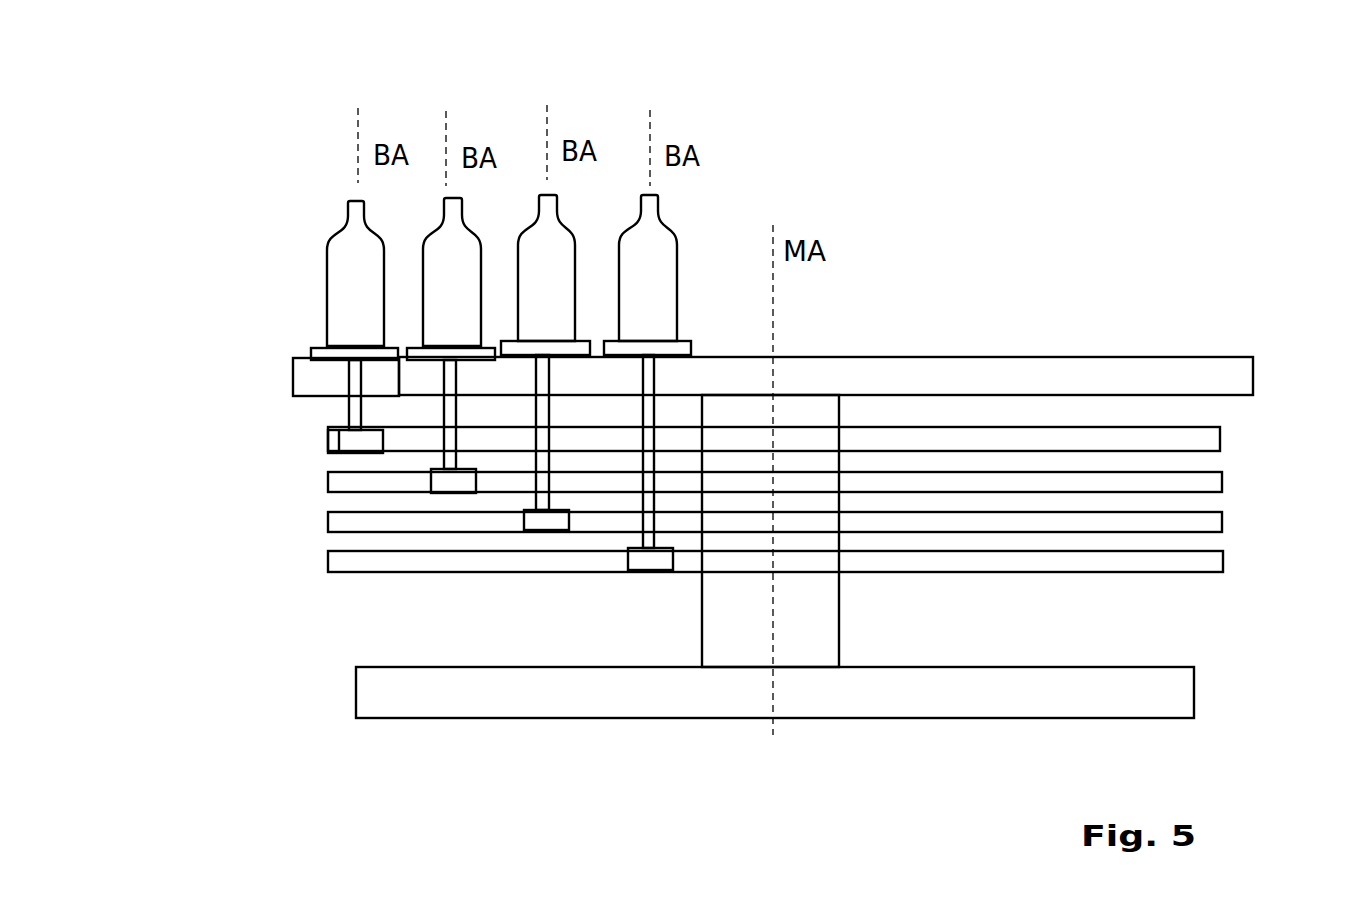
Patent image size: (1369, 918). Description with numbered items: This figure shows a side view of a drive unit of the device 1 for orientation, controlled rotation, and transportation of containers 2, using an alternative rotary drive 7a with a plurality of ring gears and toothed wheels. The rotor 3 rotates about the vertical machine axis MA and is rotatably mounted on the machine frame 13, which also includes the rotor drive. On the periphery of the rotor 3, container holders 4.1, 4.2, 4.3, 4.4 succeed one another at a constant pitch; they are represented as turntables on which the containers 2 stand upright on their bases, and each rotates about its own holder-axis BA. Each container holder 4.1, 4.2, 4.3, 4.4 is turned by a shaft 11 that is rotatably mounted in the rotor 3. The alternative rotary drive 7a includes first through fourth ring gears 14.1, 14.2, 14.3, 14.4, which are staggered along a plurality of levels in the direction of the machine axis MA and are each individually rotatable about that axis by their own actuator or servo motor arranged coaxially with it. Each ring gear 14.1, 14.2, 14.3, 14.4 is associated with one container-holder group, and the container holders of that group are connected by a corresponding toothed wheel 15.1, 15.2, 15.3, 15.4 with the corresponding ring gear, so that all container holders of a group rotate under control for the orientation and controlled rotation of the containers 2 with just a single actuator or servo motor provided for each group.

The device 1 is at (1078, 197).
The containers 2 is at (348, 265).
The rotor 3 is at (877, 373).
The container holder 4.1 is at (309, 347).
The container holder 4.2 is at (428, 352).
The container holder 4.3 is at (519, 353).
The container holder 4.4 is at (603, 352).
The alternative rotary drive 7a is at (278, 499).
The shaft 11 is at (352, 375).
The machine frame 13 is at (728, 617).
The ring gear 14.1 is at (1222, 433).
The ring gear 14.2 is at (1221, 477).
The ring gear 14.3 is at (1221, 517).
The ring gear 14.4 is at (1222, 557).
The toothed wheel 15.1 is at (327, 438).
The toothed wheel 15.2 is at (450, 467).
The toothed wheel 15.3 is at (523, 520).
The toothed wheel 15.4 is at (648, 568).